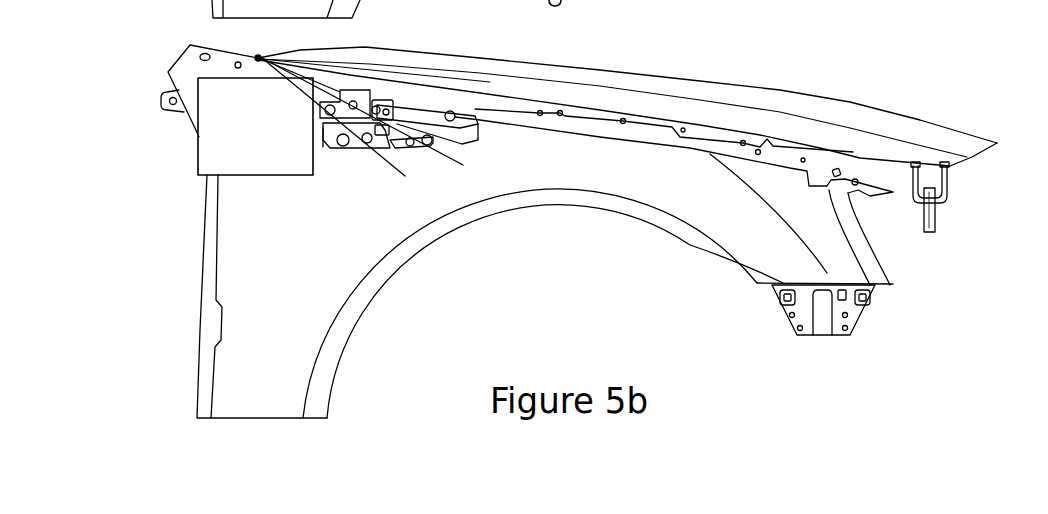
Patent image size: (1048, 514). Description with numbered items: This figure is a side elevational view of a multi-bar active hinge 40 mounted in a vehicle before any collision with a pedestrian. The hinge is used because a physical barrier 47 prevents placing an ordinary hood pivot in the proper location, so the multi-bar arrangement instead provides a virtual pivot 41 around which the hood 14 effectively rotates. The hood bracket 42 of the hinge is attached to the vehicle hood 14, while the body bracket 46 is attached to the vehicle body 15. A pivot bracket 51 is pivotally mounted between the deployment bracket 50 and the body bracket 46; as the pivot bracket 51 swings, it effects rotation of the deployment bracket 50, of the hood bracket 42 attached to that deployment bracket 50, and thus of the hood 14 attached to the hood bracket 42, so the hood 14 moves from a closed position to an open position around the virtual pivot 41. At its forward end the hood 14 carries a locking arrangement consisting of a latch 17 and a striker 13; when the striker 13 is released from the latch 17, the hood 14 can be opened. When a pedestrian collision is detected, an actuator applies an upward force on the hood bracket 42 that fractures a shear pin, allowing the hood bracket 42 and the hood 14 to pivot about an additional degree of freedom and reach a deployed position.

The striker 13 is at (950, 190).
The hood 14 is at (763, 92).
The vehicle body 15 is at (258, 315).
The latch 17 is at (929, 228).
The multi-bar active hinge 40 is at (392, 152).
The virtual pivot 41 is at (258, 58).
The hood bracket 42 is at (430, 110).
The body bracket 46 is at (372, 135).
The physical barrier 47 is at (223, 158).
The deployment bracket 50 is at (342, 108).
The pivot bracket 51 is at (355, 123).